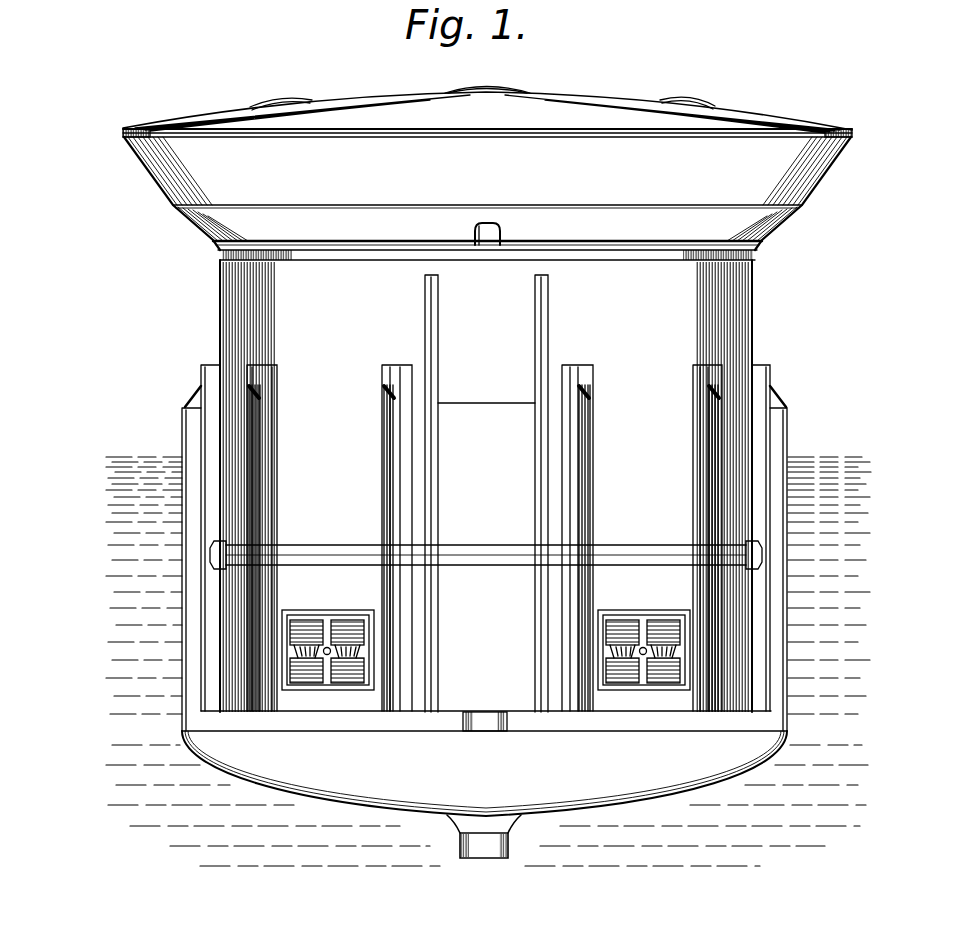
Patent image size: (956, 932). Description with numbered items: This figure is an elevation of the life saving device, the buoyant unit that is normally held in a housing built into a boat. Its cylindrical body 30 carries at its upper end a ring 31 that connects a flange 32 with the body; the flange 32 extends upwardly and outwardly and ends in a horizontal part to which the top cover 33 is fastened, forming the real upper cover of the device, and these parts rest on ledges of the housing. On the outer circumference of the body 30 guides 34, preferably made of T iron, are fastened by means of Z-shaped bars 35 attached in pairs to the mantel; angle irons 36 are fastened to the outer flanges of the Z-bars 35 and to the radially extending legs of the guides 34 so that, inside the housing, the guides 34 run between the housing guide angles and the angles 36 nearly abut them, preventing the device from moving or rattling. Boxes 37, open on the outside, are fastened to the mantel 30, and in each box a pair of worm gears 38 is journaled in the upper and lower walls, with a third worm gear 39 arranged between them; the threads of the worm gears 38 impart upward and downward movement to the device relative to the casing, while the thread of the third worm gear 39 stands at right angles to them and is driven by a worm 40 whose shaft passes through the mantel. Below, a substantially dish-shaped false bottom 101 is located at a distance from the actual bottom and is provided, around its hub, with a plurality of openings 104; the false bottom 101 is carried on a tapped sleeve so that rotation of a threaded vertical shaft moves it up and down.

The cylindrical body 30 is at (220, 299).
The ring 31 is at (213, 250).
The flange 32 is at (164, 189).
The top cover 33 is at (212, 102).
The guides 34 is at (183, 417).
The Z-shaped bars 35 is at (262, 363).
The angle irons 36 is at (199, 387).
The boxes 37 is at (300, 599).
The worm gears 38 is at (352, 618).
The third worm gear 39 is at (290, 648).
The worm 40 is at (328, 686).
The false bottom 101 is at (363, 814).
The openings 104 is at (423, 818).